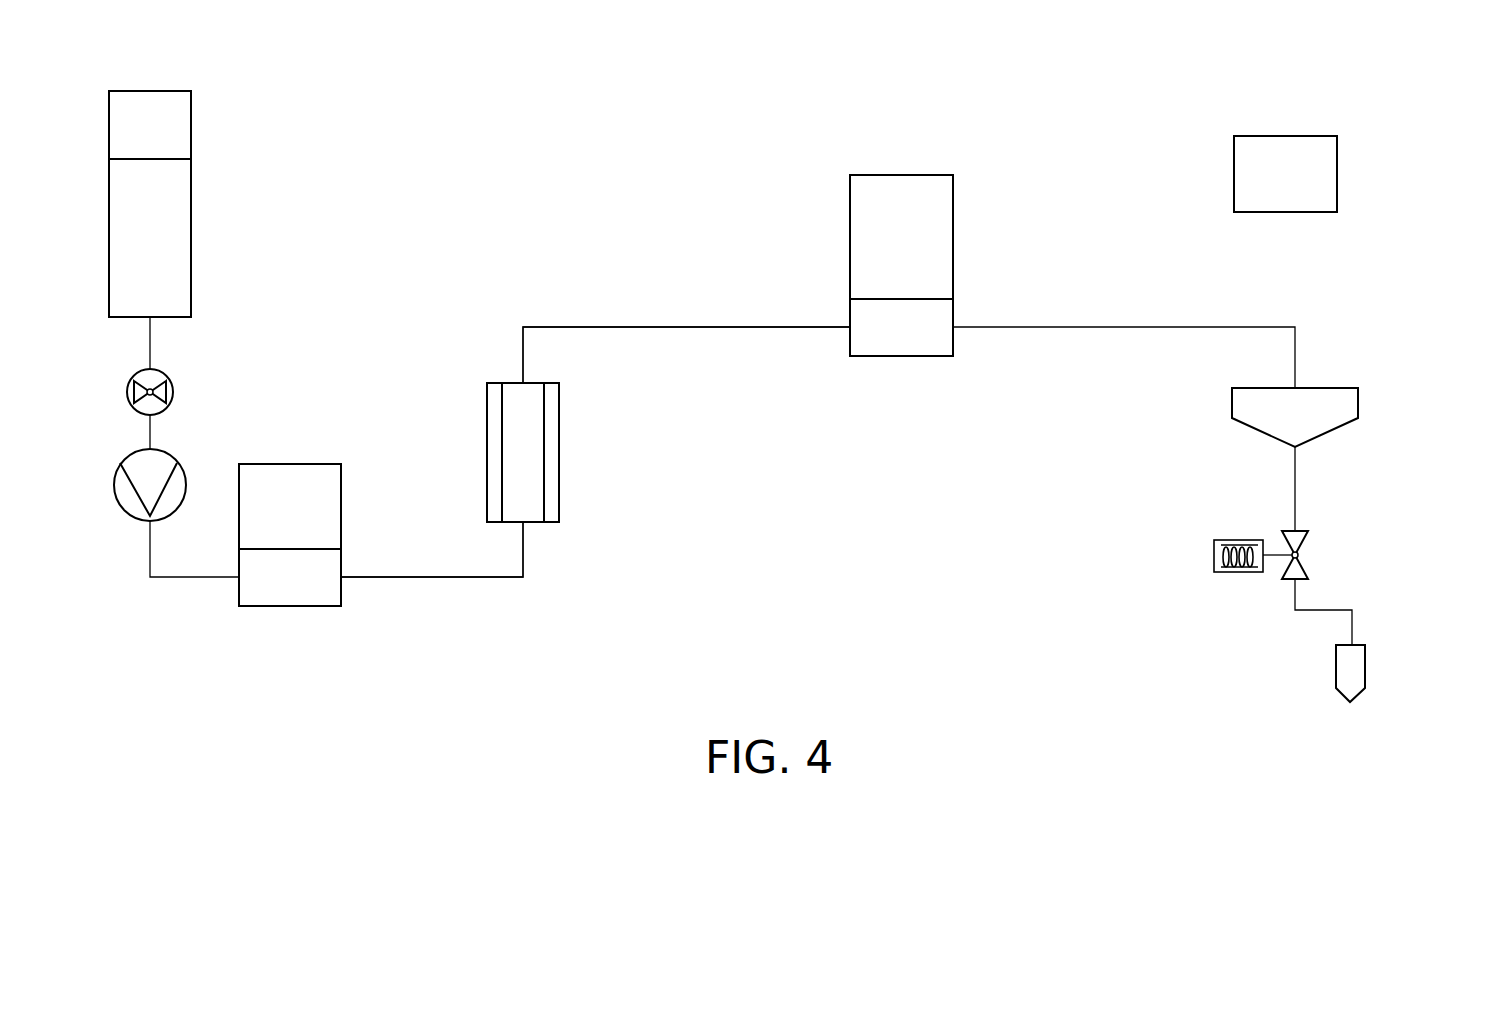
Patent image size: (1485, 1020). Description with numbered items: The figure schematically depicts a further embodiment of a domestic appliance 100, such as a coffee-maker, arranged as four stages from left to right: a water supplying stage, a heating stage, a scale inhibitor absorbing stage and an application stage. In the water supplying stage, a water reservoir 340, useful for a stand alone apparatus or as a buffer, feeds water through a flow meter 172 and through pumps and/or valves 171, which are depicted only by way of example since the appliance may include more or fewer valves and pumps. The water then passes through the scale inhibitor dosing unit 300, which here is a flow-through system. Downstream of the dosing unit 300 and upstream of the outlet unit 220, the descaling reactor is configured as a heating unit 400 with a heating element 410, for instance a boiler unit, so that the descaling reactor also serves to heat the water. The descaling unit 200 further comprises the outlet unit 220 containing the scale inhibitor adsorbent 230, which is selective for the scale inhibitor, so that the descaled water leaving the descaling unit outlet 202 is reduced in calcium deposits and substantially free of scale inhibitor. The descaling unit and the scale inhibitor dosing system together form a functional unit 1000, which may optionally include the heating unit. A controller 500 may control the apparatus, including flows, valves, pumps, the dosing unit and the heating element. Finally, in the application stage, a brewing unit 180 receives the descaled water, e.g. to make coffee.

The functional unit 1000 is at (415, 155).
The water reservoir 340 is at (208, 155).
The flow meter 172 is at (172, 390).
The pumps and/or valves 171 is at (170, 493).
The scale inhibitor dosing unit 300 is at (370, 628).
The heating unit 400 is at (580, 313).
The heating element 410 is at (552, 428).
The descaling unit 200 is at (830, 402).
The outlet unit 220 is at (963, 167).
The scale inhibitor adsorbent 230 is at (937, 225).
The domestic appliance 100 is at (1132, 143).
The controller 500 is at (1350, 142).
The descaling unit outlet 202 is at (1297, 387).
The brewing unit 180 is at (1177, 665).